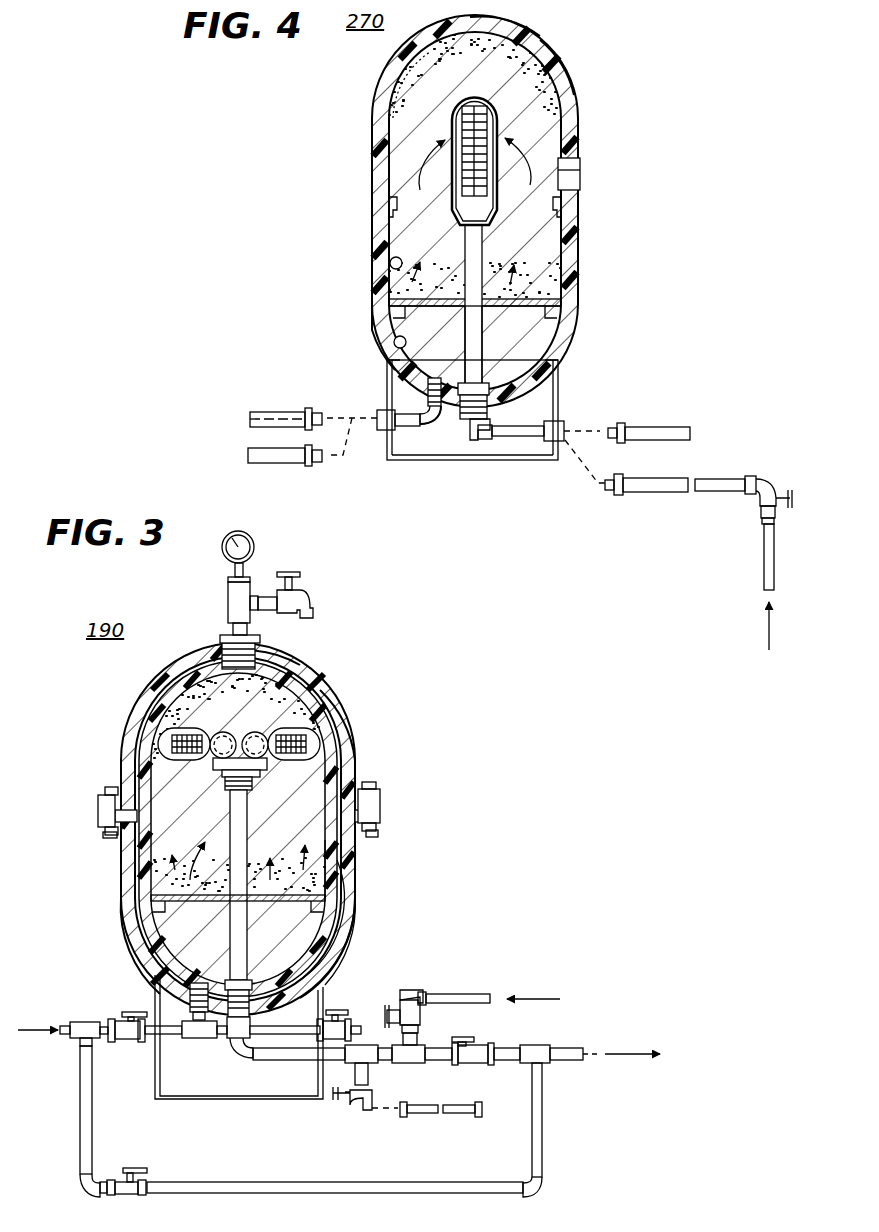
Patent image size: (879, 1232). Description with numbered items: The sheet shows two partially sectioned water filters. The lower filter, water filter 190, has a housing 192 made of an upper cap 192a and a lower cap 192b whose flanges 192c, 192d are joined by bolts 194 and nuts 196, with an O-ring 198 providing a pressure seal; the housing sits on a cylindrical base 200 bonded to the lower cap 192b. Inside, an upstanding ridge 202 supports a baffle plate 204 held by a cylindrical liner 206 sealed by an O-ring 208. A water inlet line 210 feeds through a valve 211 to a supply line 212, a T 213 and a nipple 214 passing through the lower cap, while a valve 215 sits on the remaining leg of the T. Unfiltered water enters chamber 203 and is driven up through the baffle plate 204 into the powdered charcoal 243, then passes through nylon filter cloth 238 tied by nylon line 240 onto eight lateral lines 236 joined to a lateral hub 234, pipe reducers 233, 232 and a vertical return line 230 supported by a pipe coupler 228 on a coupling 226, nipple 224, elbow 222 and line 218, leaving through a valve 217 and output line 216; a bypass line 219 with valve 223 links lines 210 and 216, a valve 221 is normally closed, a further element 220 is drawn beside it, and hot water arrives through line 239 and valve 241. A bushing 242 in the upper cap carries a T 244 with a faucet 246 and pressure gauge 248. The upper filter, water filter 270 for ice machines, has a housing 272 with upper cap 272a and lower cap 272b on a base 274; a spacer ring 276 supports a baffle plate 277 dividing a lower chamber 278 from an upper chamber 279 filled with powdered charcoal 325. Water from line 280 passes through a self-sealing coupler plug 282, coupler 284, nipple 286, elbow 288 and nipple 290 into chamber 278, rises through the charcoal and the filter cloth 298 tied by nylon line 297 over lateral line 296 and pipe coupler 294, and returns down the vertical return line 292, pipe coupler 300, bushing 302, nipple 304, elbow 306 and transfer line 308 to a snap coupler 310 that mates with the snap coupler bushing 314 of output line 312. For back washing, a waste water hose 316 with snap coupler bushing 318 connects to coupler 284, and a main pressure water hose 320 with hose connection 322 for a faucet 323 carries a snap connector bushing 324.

In FIG. 4, the water filter 270 is at (488, 258).
In FIG. 4, the housing 272 is at (603, 125).
In FIG. 4, the upper cap 272a is at (570, 65).
In FIG. 4, the lower cap 272b is at (376, 322).
In FIG. 4, the base 274 is at (557, 450).
In FIG. 4, the spacer ring 276 is at (560, 325).
In FIG. 4, the baffle plate 277 is at (515, 300).
In FIG. 4, the lower chamber 278 is at (394, 343).
In FIG. 4, the upper chamber 279 is at (390, 266).
In FIG. 4, the line 280 is at (262, 411).
In FIG. 4, the self-sealing coupler plug 282 is at (306, 412).
In FIG. 4, the coupler 284 is at (379, 418).
In FIG. 4, the nipple 286 is at (412, 428).
In FIG. 4, the elbow 288 is at (428, 400).
In FIG. 4, the nipple 290 is at (437, 380).
In FIG. 4, the vertical return line 292 is at (482, 270).
In FIG. 4, the pipe coupler 294 is at (492, 218).
In FIG. 4, the lateral line 296 is at (472, 98).
In FIG. 4, the nylon line 297 is at (440, 230).
In FIG. 4, the filter cloth 298 is at (516, 36).
In FIG. 4, the pipe coupler 300 is at (498, 390).
In FIG. 4, the bushing 302 is at (468, 425).
In FIG. 4, the nipple 304 is at (474, 442).
In FIG. 4, the elbow 306 is at (489, 442).
In FIG. 4, the transfer line 308 is at (523, 437).
In FIG. 4, the snap coupler 310 is at (556, 424).
In FIG. 4, the output line 312 is at (665, 427).
In FIG. 4, the snap coupler bushing 314 is at (621, 424).
In FIG. 4, the waste water hose 316 is at (272, 464).
In FIG. 4, the snap coupler bushing 318 is at (322, 460).
In FIG. 4, the main pressure water hose 320 is at (679, 492).
In FIG. 4, the hose connection 322 is at (755, 462).
In FIG. 4, the faucet 323 is at (760, 508).
In FIG. 4, the snap connector bushing 324 is at (616, 484).
In FIG. 4, the powdered charcoal 325 is at (378, 104).
In FIG. 3, the water filter 190 is at (339, 864).
In FIG. 3, the housing 192 is at (110, 912).
In FIG. 3, the upper cap 192a is at (280, 680).
In FIG. 3, the lower cap 192b is at (360, 937).
In FIG. 3, the flange 192c is at (380, 808).
In FIG. 3, the flange 192d is at (104, 814).
In FIG. 3, the bolts 194 is at (100, 790).
In FIG. 3, the nuts 196 is at (105, 840).
In FIG. 3, the O-ring 198 is at (355, 745).
In FIG. 3, the base 200 is at (154, 1103).
In FIG. 3, the upstanding ridge 202 is at (360, 887).
In FIG. 3, the chamber 203 is at (146, 977).
In FIG. 3, the baffle plate 204 is at (357, 917).
In FIG. 3, the cylindrical liner 206 is at (357, 857).
In FIG. 3, the O-ring 208 is at (357, 797).
In FIG. 3, the water inlet line 210 is at (66, 1038).
In FIG. 3, the valve 211 is at (125, 1043).
In FIG. 3, the supply line 212 is at (128, 1040).
In FIG. 3, the T 213 is at (170, 1037).
In FIG. 3, the nipple 214 is at (192, 1003).
In FIG. 3, the valve 215 is at (342, 1008).
In FIG. 3, the output line 216 is at (567, 1054).
In FIG. 3, the valve 217 is at (484, 1046).
In FIG. 3, the line 218 is at (318, 1090).
In FIG. 3, the bypass line 219 is at (471, 1186).
In FIG. 3, the pipe 220 is at (458, 1104).
In FIG. 3, the valve 221 is at (372, 1093).
In FIG. 3, the elbow 222 is at (232, 1042).
In FIG. 3, the valve 223 is at (130, 1180).
In FIG. 3, the nipple 224 is at (243, 1068).
In FIG. 3, the coupling 226 is at (200, 1047).
In FIG. 3, the pipe coupler 228 is at (250, 980).
In FIG. 3, the vertical return line 230 is at (230, 922).
In FIG. 3, the pipe reducer 232 is at (228, 830).
In FIG. 3, the pipe reducer 233 is at (245, 822).
In FIG. 3, the lateral hub 234 is at (226, 784).
In FIG. 3, the lateral lines 236 is at (138, 722).
In FIG. 3, the nylon filter cloth 238 is at (160, 744).
In FIG. 3, the line 239 is at (474, 993).
In FIG. 3, the nylon line 240 is at (268, 722).
In FIG. 3, the valve 241 is at (418, 995).
In FIG. 3, the bushing 242 is at (222, 639).
In FIG. 3, the powdered charcoal 243 is at (192, 690).
In FIG. 3, the T 244 is at (230, 600).
In FIG. 3, the faucet 246 is at (314, 604).
In FIG. 3, the pressure gauge 248 is at (224, 553).